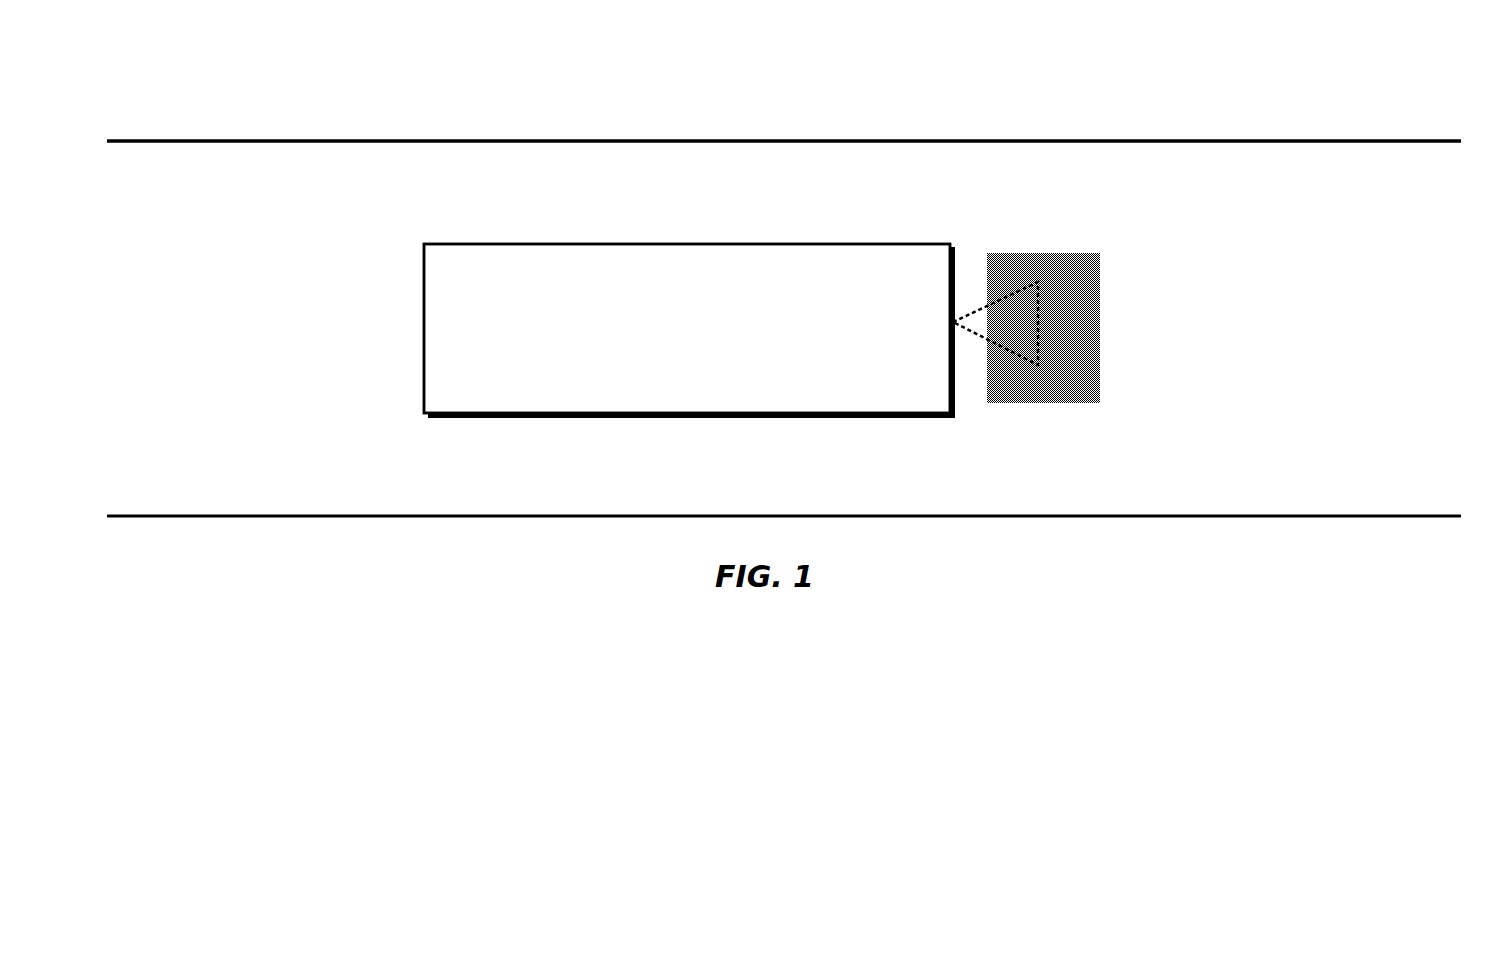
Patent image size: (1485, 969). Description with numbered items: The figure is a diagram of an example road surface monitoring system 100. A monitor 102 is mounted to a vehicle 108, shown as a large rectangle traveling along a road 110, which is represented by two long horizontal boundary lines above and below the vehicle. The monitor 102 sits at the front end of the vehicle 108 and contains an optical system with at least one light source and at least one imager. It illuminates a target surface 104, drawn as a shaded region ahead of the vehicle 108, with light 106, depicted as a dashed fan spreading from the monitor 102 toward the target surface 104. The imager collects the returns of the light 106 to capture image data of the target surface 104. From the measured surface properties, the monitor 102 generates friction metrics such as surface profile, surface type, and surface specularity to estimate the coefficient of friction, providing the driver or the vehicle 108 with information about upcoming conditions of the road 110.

The road surface monitoring system 100 is at (554, 94).
The monitor 102 is at (968, 243).
The target surface 104 is at (1100, 330).
The light 106 is at (1005, 352).
The vehicle 108 is at (703, 340).
The road 110 is at (1189, 140).